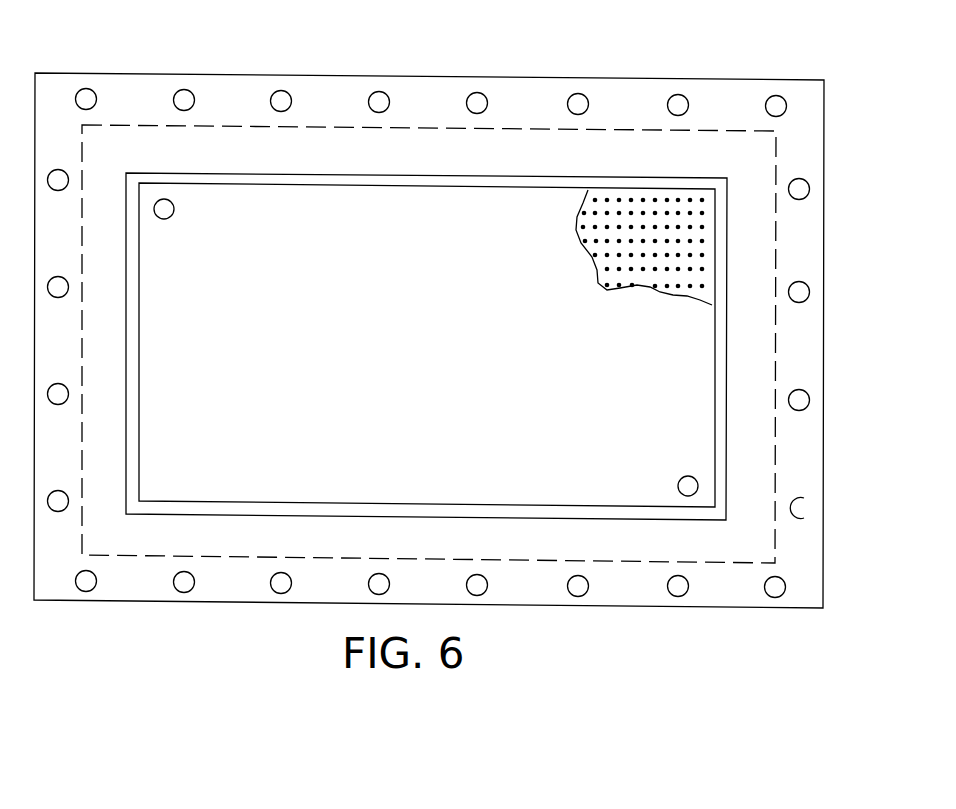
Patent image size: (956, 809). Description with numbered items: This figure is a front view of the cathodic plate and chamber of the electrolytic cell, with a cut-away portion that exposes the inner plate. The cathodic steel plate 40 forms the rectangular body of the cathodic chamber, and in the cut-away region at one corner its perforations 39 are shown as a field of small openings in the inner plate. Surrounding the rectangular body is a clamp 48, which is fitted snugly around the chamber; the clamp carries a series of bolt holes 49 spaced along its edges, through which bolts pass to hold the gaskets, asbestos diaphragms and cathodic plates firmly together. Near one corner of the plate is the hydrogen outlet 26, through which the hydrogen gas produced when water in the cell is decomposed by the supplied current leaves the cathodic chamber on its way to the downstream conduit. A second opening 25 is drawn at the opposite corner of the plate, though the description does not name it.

The clamp 48 is at (450, 307).
The bolt holes 49 is at (429, 300).
The cathodic steel plate 40 is at (422, 423).
The perforations 39 is at (644, 157).
The hydrogen outlet 26 is at (127, 110).
The hole 25 is at (741, 580).